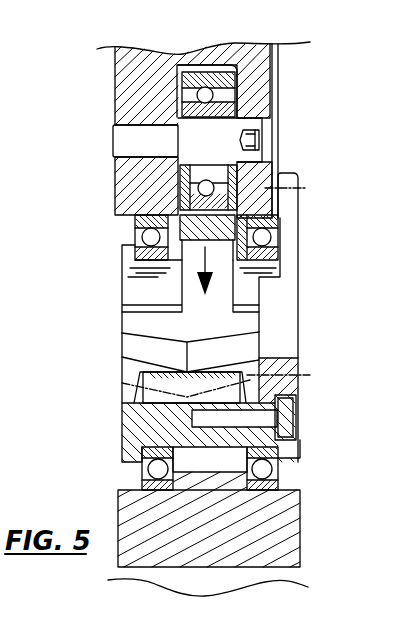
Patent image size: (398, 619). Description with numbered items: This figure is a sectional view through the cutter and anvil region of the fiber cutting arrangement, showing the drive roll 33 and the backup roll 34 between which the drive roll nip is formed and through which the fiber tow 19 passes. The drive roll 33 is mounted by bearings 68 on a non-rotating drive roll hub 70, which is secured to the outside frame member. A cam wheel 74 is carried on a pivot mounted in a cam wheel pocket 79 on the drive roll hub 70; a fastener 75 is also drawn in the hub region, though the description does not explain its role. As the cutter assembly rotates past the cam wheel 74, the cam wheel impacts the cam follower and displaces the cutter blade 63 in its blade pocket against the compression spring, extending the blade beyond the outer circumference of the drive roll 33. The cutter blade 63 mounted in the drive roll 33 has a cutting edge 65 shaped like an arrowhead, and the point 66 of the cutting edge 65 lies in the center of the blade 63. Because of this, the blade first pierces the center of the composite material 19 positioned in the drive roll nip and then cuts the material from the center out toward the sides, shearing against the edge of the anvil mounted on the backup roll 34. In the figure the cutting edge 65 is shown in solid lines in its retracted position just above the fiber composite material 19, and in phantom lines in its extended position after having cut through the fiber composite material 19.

The drive roll hub 70 is at (130, 88).
The cam wheel pocket 79 is at (232, 67).
The bolt 75 is at (258, 158).
The cam wheel 74 is at (190, 217).
The bearings 68 is at (146, 236).
The drive roll 33 is at (140, 287).
The cutter blade 63 is at (226, 305).
The fiber tow 19 is at (187, 372).
The point 66 is at (189, 372).
The cutting edge 65 is at (250, 360).
The backup roll 34 is at (133, 432).